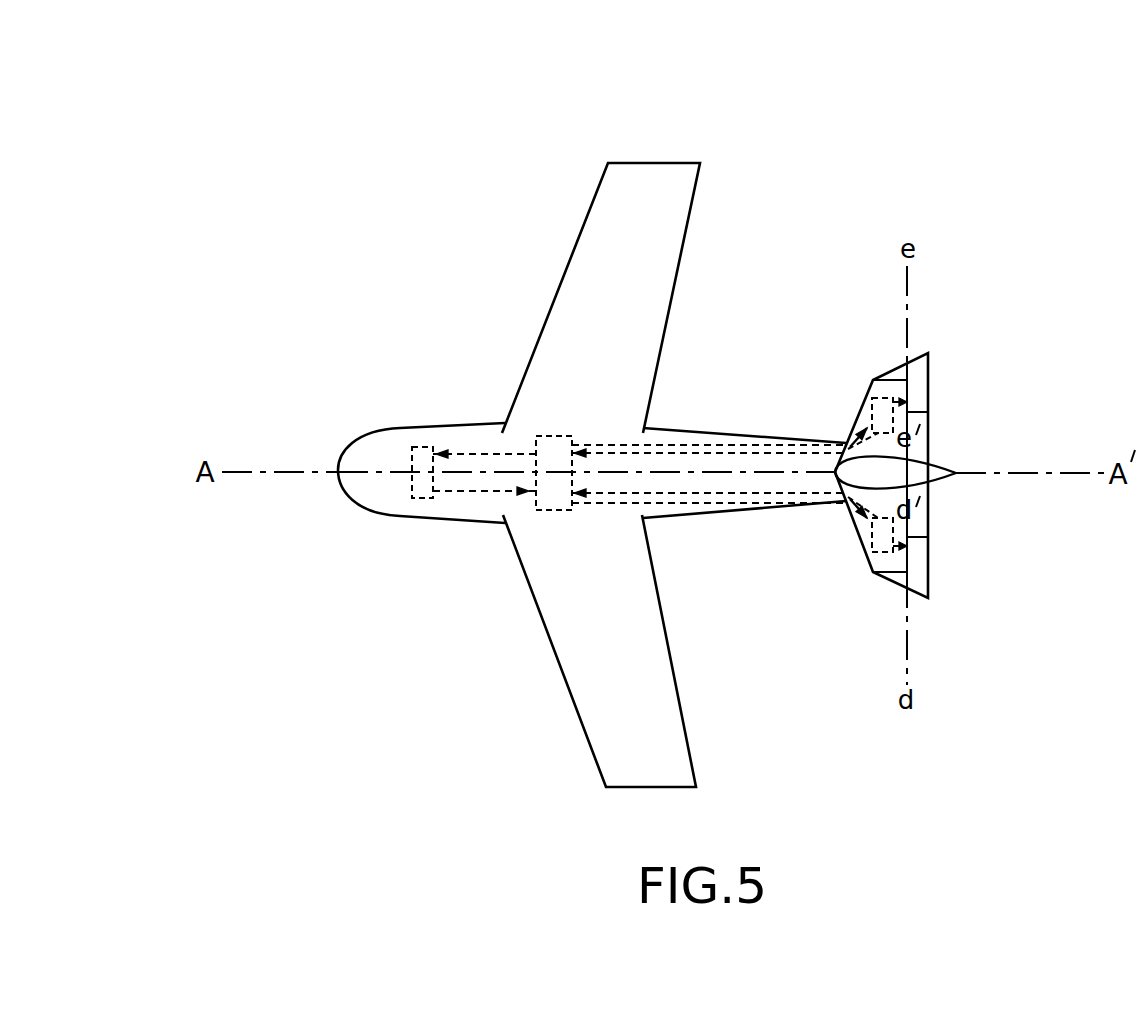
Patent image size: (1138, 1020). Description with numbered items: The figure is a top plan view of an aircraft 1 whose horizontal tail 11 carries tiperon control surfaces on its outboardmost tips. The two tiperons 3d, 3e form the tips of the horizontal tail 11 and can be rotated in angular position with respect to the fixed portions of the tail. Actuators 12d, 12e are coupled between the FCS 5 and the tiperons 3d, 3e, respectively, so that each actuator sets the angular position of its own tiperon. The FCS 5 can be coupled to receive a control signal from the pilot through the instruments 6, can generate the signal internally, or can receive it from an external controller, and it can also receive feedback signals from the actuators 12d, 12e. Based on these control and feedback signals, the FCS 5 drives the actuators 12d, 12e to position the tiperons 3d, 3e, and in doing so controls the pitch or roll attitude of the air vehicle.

The aircraft 1 is at (832, 252).
The tiperon 3e is at (940, 362).
The tiperon 3d is at (970, 575).
The horizontal tail 11 is at (970, 417).
The actuator 12e is at (870, 402).
The actuator 12d is at (872, 540).
The FCS 5 is at (558, 437).
The instruments 6 is at (422, 447).